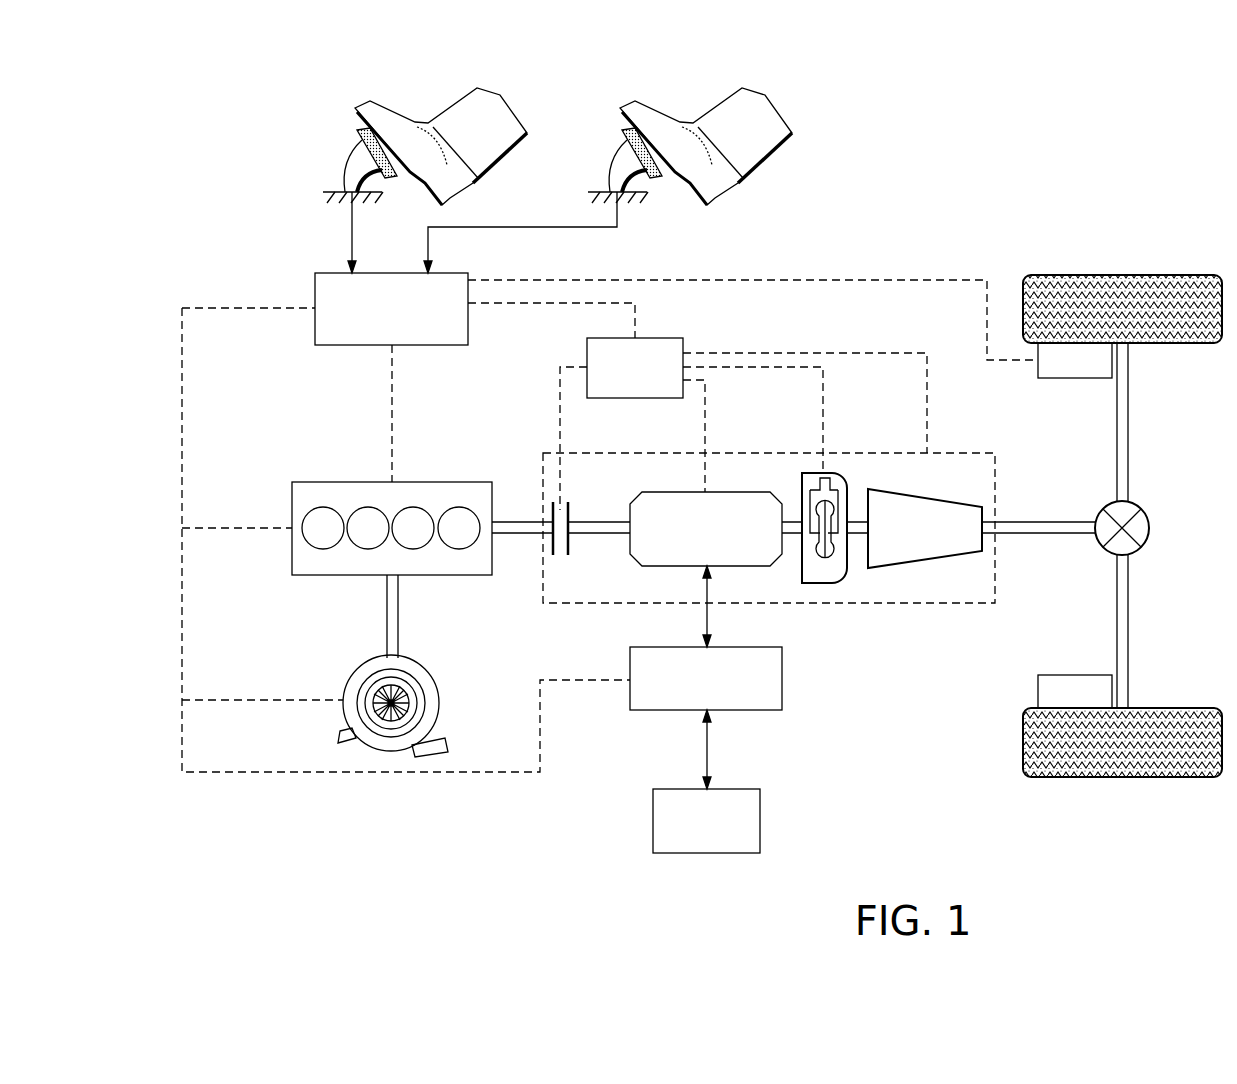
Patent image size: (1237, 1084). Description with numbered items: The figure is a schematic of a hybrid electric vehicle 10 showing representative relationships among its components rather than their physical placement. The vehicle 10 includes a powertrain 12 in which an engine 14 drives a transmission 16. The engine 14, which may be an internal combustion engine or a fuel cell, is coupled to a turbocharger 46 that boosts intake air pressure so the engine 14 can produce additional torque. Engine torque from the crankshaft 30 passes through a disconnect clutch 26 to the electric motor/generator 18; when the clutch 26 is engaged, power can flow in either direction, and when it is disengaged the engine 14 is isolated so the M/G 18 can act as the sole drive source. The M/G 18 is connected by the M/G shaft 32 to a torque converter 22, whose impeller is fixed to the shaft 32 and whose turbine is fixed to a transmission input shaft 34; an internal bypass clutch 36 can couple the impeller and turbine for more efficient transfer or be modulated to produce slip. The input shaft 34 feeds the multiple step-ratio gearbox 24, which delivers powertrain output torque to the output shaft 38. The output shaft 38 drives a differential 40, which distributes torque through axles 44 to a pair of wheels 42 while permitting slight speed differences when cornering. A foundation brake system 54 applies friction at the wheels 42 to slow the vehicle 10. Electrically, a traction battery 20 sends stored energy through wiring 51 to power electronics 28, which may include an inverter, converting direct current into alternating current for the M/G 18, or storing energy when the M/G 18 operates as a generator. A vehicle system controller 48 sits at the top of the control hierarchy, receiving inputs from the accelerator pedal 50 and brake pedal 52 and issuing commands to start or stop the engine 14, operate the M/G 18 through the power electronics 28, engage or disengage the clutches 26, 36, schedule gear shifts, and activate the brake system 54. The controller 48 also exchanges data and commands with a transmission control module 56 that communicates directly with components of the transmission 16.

The hybrid electric vehicle 10 is at (903, 190).
The powertrain 12 is at (396, 816).
The engine 14 is at (348, 482).
The transmission 16 is at (776, 452).
The electric motor/generator 18 is at (678, 492).
The traction battery 20 is at (653, 820).
The torque converter 22 is at (823, 583).
The gearbox 24 is at (930, 568).
The disconnect clutch 26 is at (570, 547).
The power electronics 28 is at (630, 660).
The crankshaft 30 is at (527, 522).
The M/G shaft 32 is at (588, 522).
The transmission input shaft 34 is at (857, 522).
The bypass clutch 36 is at (827, 478).
The output shaft 38 is at (1040, 522).
The differential 40 is at (1150, 528).
The wheels 42 is at (1120, 275).
The axles 44 is at (1130, 425).
The turbocharger 46 is at (350, 672).
The vehicle system controller 48 is at (332, 272).
The accelerator pedal 50 is at (360, 148).
The wiring 51 is at (707, 755).
The brake pedal 52 is at (625, 148).
The foundation brake system 54 is at (1075, 378).
The transmission control module 56 is at (587, 355).